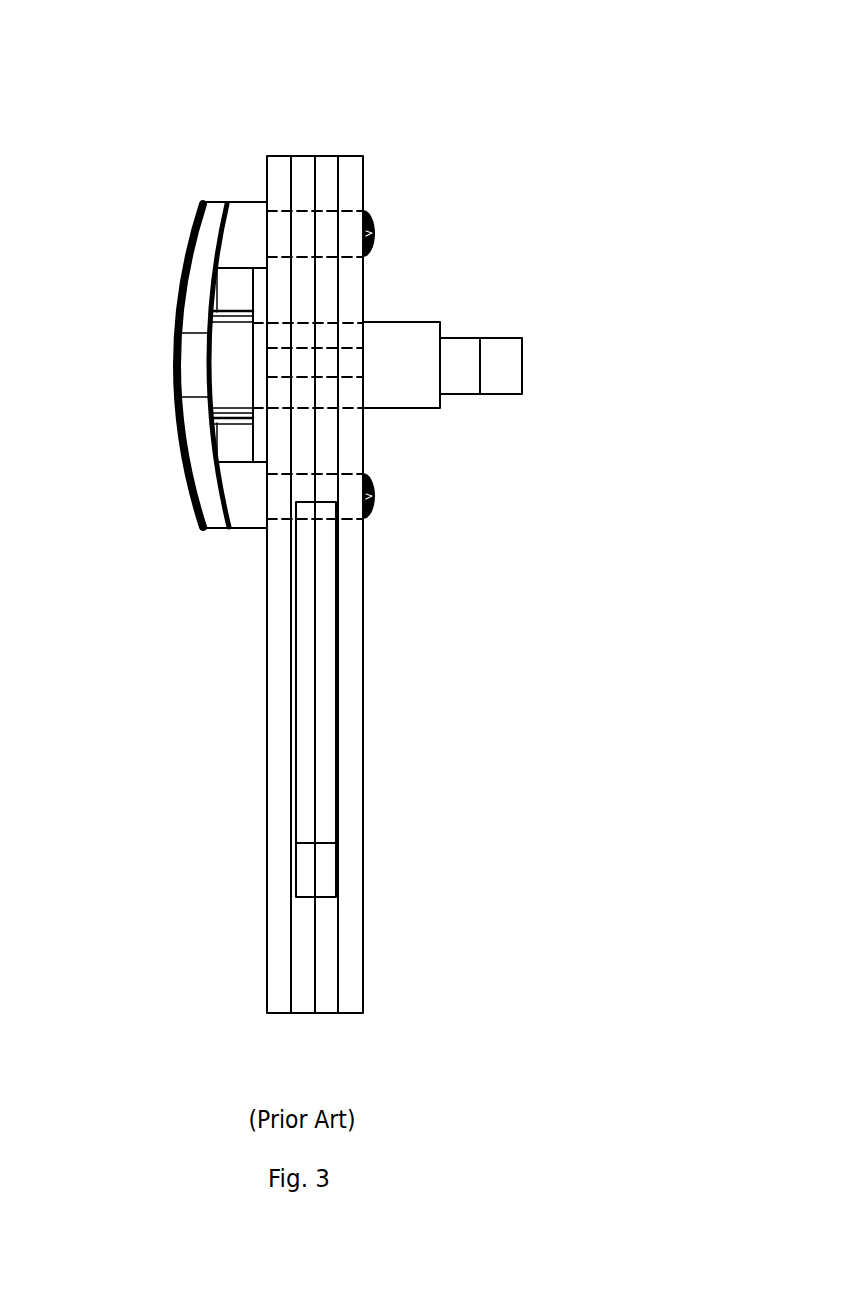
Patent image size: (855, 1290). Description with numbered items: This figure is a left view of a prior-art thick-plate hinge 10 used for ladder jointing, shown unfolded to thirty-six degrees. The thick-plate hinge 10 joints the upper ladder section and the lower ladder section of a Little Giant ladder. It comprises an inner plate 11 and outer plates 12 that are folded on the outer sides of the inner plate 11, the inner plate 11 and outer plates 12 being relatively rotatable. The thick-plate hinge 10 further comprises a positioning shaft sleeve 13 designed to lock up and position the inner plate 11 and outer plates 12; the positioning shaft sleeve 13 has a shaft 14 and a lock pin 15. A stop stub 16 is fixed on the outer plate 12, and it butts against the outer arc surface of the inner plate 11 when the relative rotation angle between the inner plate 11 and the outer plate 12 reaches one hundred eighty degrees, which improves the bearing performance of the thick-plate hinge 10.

The thick-plate hinge 10 is at (160, 235).
The inner plate 11 is at (303, 172).
The outer plates 12 is at (277, 172).
The positioning shaft sleeve 13 is at (197, 431).
The shaft 14 is at (410, 340).
The lock pin 15 is at (375, 237).
The stop stub 16 is at (350, 368).